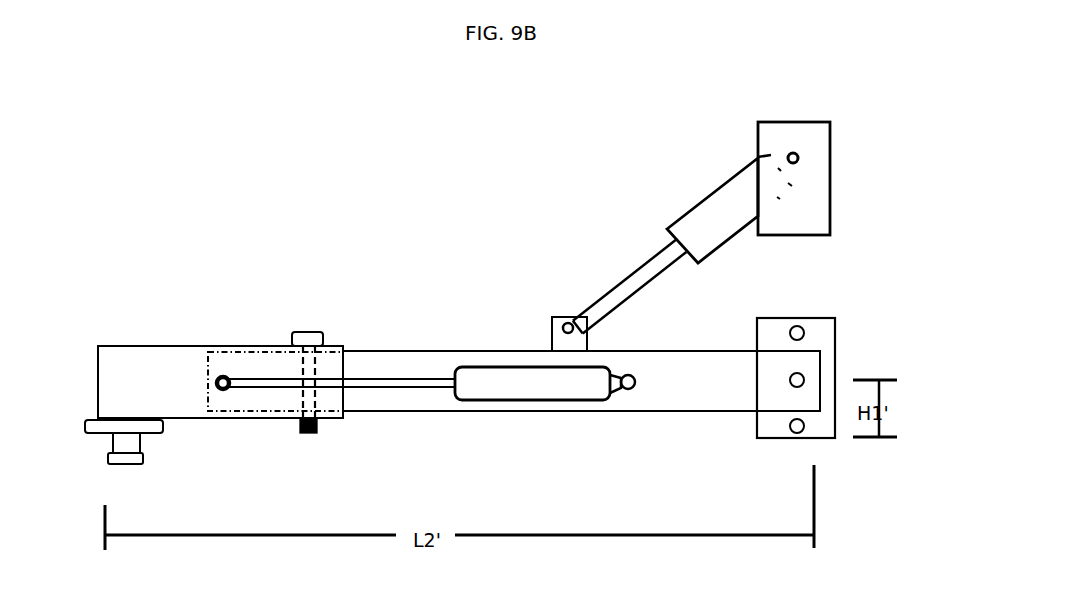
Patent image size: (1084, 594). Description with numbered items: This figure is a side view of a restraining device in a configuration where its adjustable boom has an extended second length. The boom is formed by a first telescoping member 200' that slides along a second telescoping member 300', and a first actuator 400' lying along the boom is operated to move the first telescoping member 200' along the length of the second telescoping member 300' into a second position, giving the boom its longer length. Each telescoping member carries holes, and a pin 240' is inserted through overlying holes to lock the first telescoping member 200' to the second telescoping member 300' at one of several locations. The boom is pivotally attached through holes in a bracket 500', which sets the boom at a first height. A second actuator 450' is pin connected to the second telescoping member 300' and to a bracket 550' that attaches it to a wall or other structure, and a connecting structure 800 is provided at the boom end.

The first telescoping member 200' is at (277, 360).
The pin 240' is at (333, 346).
The second telescoping member 300' is at (581, 413).
The first actuator 400' is at (545, 426).
The second actuator 450' is at (645, 254).
The bracket 500' is at (829, 355).
The bracket 550' is at (736, 164).
The connecting structure 800 is at (133, 462).